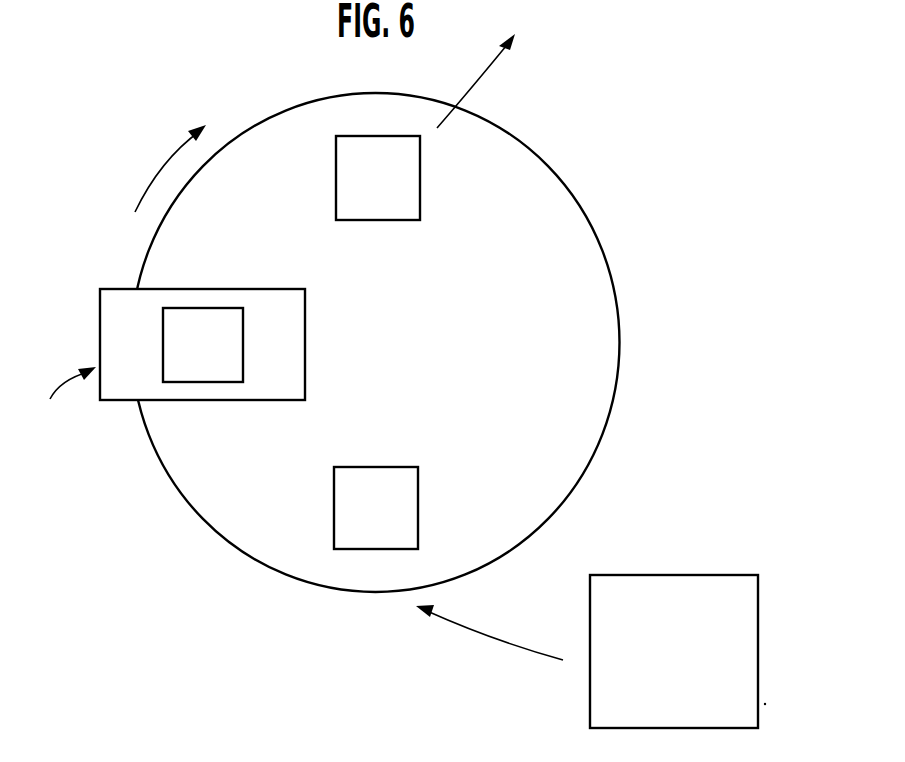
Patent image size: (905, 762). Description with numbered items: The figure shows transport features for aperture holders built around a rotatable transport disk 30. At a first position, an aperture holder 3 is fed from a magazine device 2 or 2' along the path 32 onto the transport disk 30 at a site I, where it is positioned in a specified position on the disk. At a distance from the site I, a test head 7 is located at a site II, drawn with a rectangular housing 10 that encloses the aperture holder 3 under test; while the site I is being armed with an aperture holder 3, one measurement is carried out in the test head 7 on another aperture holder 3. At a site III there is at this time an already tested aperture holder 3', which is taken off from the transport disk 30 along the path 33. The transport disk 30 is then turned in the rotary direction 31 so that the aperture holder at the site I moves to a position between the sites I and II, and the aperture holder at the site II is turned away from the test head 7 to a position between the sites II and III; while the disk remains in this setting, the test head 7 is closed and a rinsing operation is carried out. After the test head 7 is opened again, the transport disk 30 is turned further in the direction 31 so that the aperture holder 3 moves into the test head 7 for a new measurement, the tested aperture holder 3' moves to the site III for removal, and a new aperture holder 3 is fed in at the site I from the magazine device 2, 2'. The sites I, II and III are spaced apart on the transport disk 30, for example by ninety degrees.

The magazine device 2 is at (693, 651).
The magazine device 2' is at (784, 711).
The aperture holder 3 is at (309, 427).
The aperture holder 3' is at (400, 198).
The test head 7 is at (66, 399).
The carrier 10 is at (110, 320).
The transport disk 30 is at (619, 357).
The rotary direction 31 is at (170, 160).
The path 32 is at (486, 637).
The path 33 is at (488, 78).
The site I is at (376, 489).
The site II is at (246, 345).
The site III is at (378, 198).